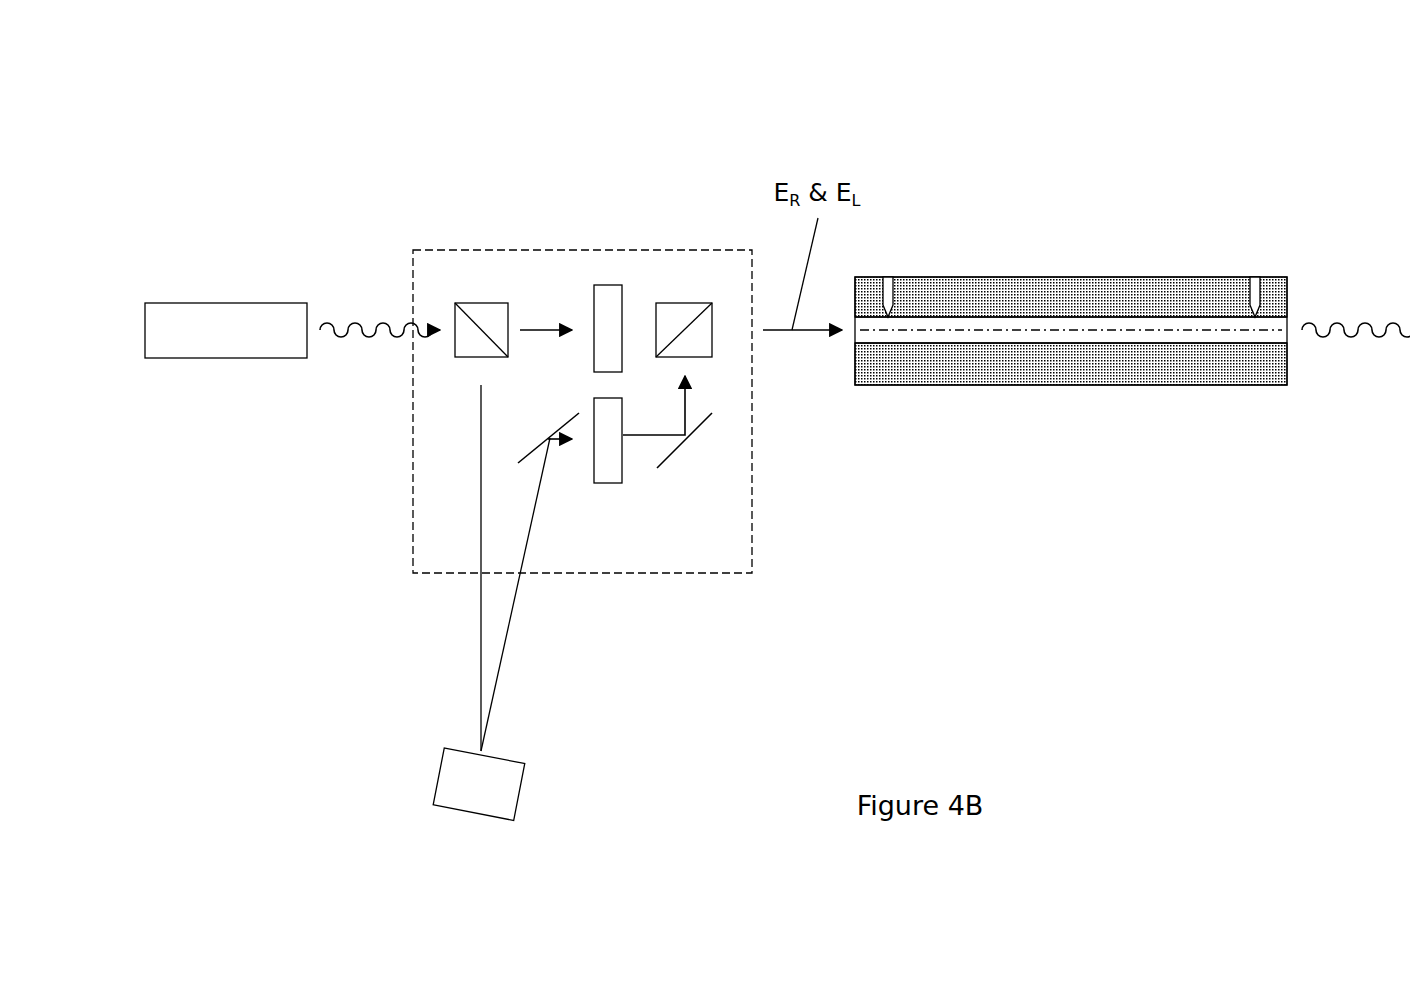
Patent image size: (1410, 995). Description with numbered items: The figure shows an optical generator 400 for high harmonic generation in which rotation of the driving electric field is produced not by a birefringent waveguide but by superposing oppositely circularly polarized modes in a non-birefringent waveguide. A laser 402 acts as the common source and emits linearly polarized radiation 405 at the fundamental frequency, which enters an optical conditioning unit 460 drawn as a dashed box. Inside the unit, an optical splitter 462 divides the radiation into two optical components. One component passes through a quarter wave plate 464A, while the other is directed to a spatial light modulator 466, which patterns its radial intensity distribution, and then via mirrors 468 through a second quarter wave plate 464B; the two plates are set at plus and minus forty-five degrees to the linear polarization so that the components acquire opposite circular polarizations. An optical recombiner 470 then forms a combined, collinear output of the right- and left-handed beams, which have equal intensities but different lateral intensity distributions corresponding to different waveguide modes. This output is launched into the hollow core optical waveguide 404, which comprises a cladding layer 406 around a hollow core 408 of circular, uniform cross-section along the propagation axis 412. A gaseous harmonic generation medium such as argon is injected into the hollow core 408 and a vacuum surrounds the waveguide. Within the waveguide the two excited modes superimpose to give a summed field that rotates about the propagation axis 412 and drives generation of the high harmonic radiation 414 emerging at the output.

The optical generator 400 is at (276, 166).
The laser 402 is at (226, 330).
The optical waveguide 404 is at (1073, 318).
The linearly polarized radiation 405 is at (352, 337).
The cladding layer 406 is at (1162, 305).
The hollow core 408 is at (1120, 338).
The propagation axis 412 is at (1178, 330).
The high harmonic radiation 414 is at (1332, 337).
The optical conditioning unit 460 is at (413, 480).
The optical splitter 462 is at (482, 303).
The quarter wave plate 464A is at (605, 283).
The quarter wave plate 464B is at (613, 485).
The spatial light modulator 466 is at (491, 602).
The mirrors 468 is at (532, 452).
The optical recombiner 470 is at (687, 303).